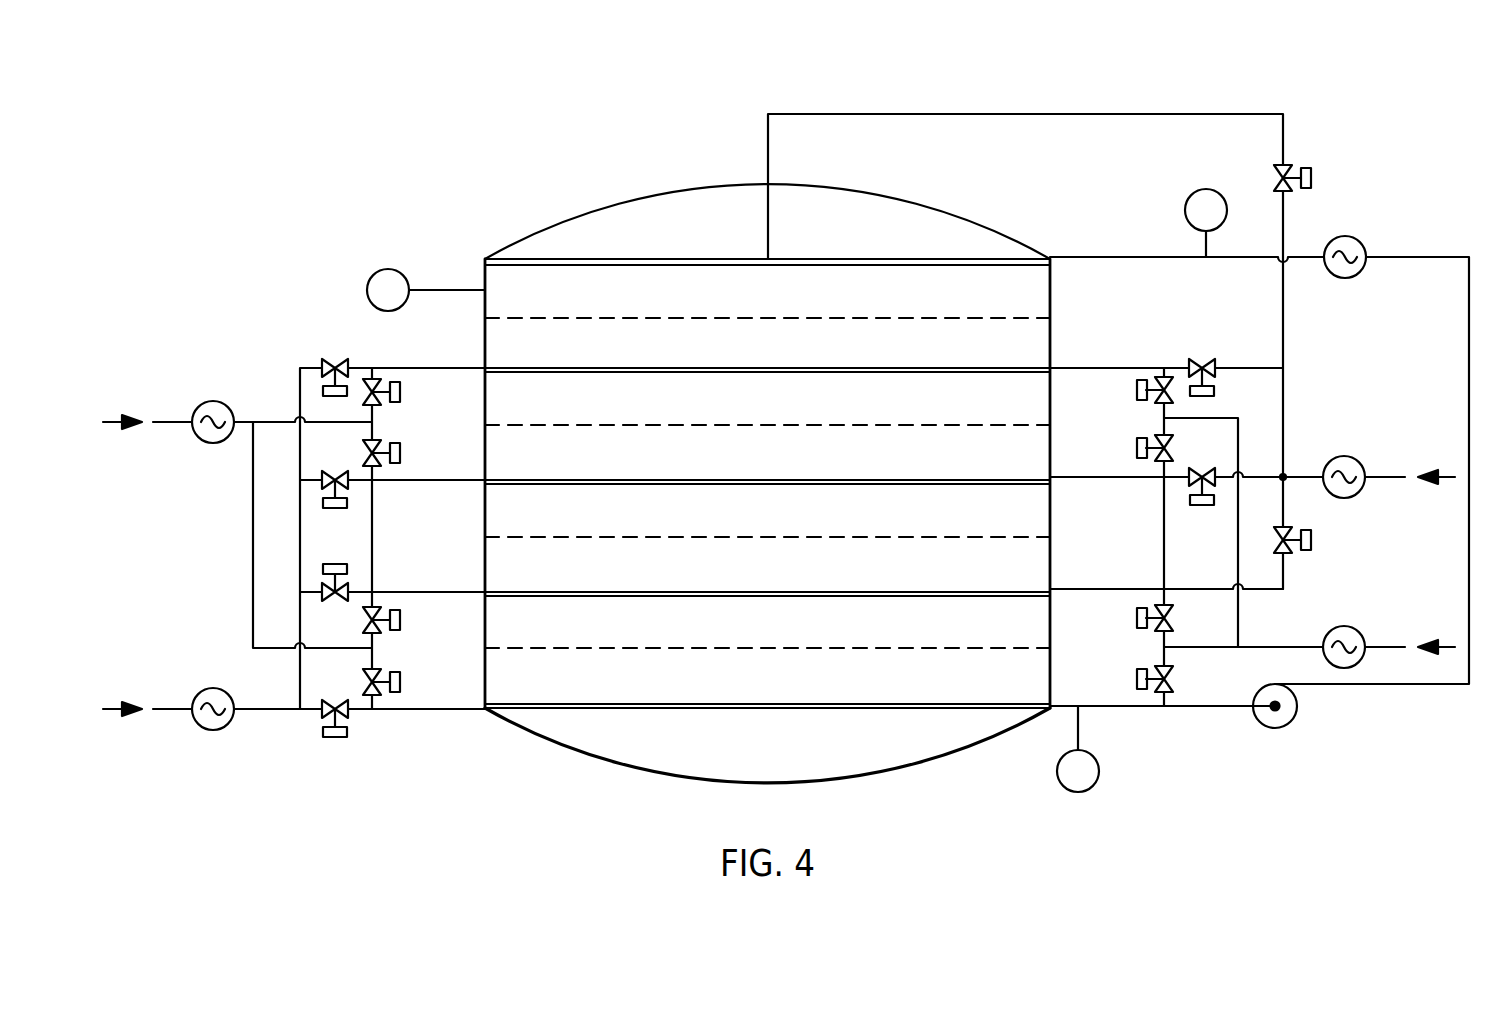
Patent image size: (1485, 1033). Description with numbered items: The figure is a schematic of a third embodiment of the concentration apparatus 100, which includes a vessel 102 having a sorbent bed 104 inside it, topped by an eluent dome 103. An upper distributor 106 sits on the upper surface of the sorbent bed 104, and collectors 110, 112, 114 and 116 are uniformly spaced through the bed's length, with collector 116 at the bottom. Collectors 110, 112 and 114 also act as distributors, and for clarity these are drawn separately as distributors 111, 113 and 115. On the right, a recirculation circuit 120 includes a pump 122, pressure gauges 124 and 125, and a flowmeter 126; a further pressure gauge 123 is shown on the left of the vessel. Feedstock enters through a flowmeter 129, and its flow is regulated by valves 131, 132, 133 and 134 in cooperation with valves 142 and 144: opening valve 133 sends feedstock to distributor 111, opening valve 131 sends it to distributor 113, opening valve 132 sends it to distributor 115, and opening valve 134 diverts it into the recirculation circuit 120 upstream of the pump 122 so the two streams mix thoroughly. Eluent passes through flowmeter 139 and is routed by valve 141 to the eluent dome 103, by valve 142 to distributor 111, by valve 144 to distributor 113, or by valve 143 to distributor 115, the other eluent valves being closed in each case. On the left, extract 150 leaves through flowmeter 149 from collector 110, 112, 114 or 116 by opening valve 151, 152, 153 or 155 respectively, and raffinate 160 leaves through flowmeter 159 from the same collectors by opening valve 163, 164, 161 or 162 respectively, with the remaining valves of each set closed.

The concentration apparatus 100 is at (590, 140).
The vessel 102 is at (568, 222).
The eluent dome 103 is at (884, 222).
The sorbent bed 104 is at (1007, 272).
The upper distributor 106 is at (895, 259).
The collector 110 is at (893, 368).
The distributor 111 is at (895, 372).
The collector 112 is at (893, 480).
The distributor 113 is at (895, 484).
The collector 114 is at (893, 592).
The distributor 115 is at (895, 596).
The collector 116 is at (893, 692).
The recirculation circuit 120 is at (1469, 335).
The pump 122 is at (1297, 716).
The pressure gauge 123 is at (384, 270).
The pressure gauge 124 is at (1095, 786).
The pressure gauge 125 is at (1200, 197).
The flowmeter 126 is at (1346, 236).
The flowmeter 129 is at (1353, 630).
The valve 131 is at (1158, 445).
The valve 132 is at (1163, 606).
The valve 133 is at (1163, 378).
The valve 134 is at (1160, 667).
The flowmeter 139 is at (1353, 461).
The valve 141 is at (1286, 166).
The valve 142 is at (1211, 378).
The valve 143 is at (1290, 555).
The valve 144 is at (1190, 490).
The flowmeter 149 is at (200, 697).
The extract 150 is at (108, 709).
The valve 151 is at (326, 362).
The valve 152 is at (352, 484).
The valve 153 is at (340, 586).
The valve 155 is at (352, 714).
The flowmeter 159 is at (196, 408).
The raffinate 160 is at (108, 422).
The valve 161 is at (382, 630).
The valve 162 is at (382, 672).
The valve 163 is at (378, 378).
The valve 164 is at (378, 440).